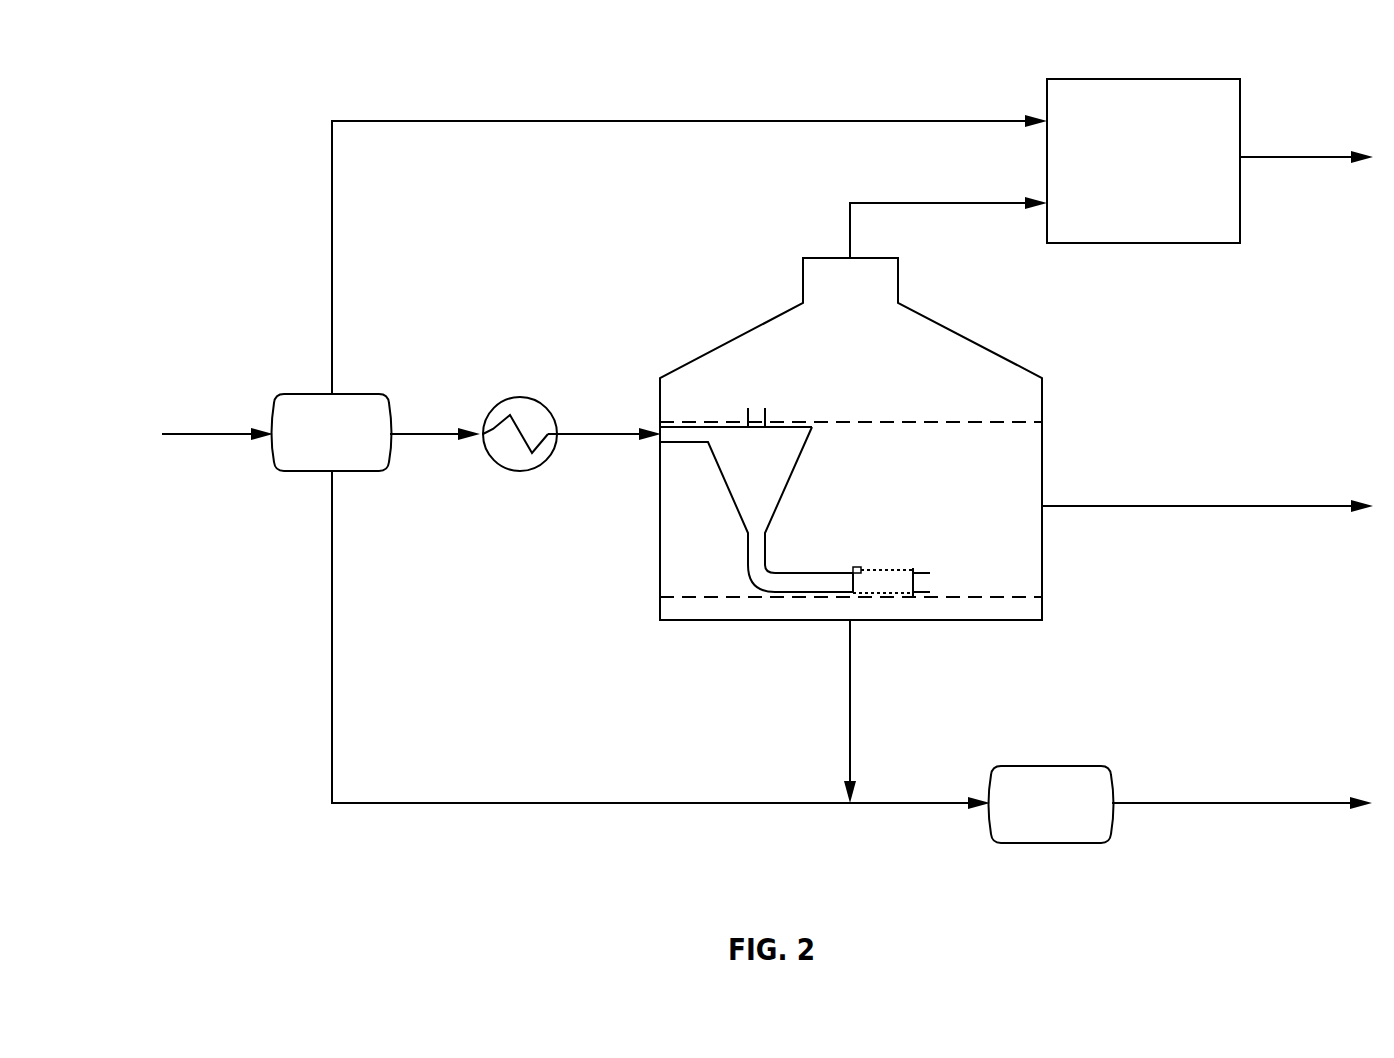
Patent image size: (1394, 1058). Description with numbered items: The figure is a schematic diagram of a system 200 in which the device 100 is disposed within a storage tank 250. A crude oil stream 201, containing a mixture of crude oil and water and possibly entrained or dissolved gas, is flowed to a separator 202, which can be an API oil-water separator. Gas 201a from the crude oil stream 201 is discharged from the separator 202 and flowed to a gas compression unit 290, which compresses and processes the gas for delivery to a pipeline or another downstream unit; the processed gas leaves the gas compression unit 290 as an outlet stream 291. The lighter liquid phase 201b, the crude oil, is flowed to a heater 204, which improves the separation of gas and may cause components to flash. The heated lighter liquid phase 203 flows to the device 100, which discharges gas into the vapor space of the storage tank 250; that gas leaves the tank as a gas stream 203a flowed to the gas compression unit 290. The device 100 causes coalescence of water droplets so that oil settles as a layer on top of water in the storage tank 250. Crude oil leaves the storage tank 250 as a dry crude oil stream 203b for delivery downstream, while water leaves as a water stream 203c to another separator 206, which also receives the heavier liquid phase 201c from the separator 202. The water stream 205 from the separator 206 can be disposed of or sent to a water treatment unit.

The system 200 is at (268, 812).
The crude oil stream 201 is at (210, 434).
The gas 201a is at (366, 121).
The lighter liquid phase 201b is at (426, 434).
The heavier liquid phase 201c is at (366, 803).
The separator 202 is at (332, 432).
The heated lighter liquid phase 203 is at (610, 434).
The gas outlet stream 203a is at (850, 230).
The dry crude oil stream 203b is at (1191, 506).
The water stream 203c is at (850, 720).
The heater 204 is at (522, 397).
The water stream 205 is at (1190, 803).
The separator 206 is at (1051, 804).
The device 100 is at (841, 444).
The storage tank 250 is at (1042, 389).
The gas compression unit 290 is at (1143, 161).
The processed gas outlet stream 291 is at (1282, 157).